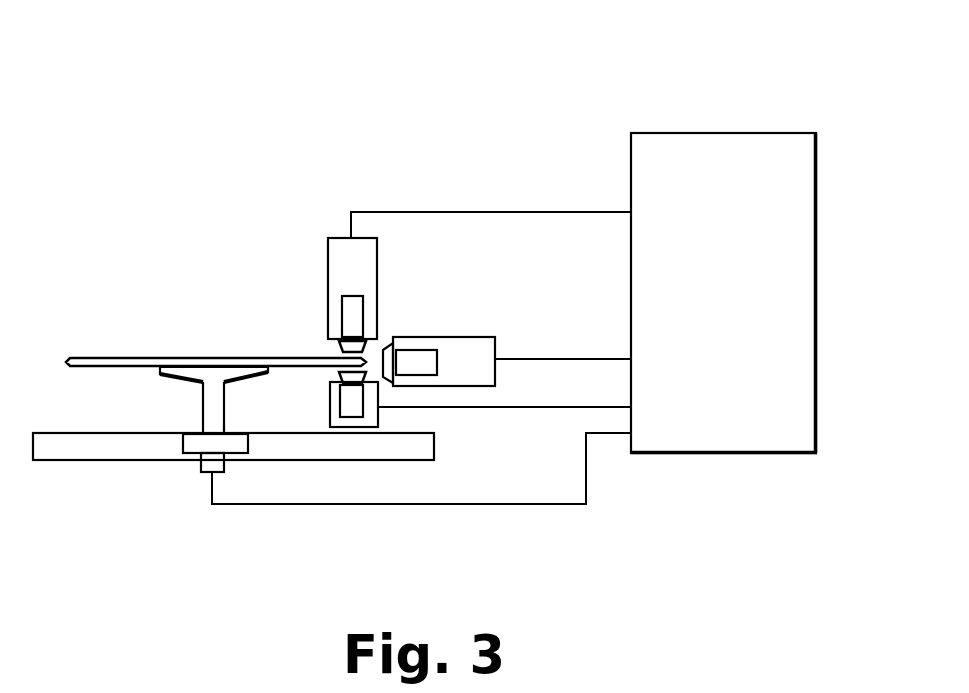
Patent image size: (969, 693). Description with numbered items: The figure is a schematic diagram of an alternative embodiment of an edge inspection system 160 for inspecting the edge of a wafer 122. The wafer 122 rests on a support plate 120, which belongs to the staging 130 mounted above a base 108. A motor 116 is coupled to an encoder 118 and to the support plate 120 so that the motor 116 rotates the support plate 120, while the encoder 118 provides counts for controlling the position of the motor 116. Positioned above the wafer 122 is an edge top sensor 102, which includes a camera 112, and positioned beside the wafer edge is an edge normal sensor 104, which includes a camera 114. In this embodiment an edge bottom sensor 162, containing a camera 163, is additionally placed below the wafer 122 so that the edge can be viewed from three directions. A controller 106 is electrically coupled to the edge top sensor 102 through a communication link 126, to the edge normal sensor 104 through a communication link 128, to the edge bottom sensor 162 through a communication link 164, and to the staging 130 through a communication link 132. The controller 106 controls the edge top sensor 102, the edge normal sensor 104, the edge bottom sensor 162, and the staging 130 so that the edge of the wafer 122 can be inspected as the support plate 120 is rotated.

The edge inspection system 160 is at (410, 68).
The controller 106 is at (817, 201).
The communication link 126 is at (490, 211).
The edge top sensor 102 is at (378, 282).
The camera 112 is at (344, 306).
The wafer 122 is at (100, 357).
The support plate 120 is at (175, 377).
The staging 130 is at (225, 418).
The edge normal sensor 104 is at (446, 337).
The camera 114 is at (410, 355).
The communication link 128 is at (548, 358).
The edge bottom sensor 162 is at (378, 417).
The camera 163 is at (355, 407).
The communication link 164 is at (522, 406).
The base 108 is at (58, 453).
The motor 116 is at (181, 442).
The encoder 118 is at (211, 473).
The communication link 132 is at (573, 504).